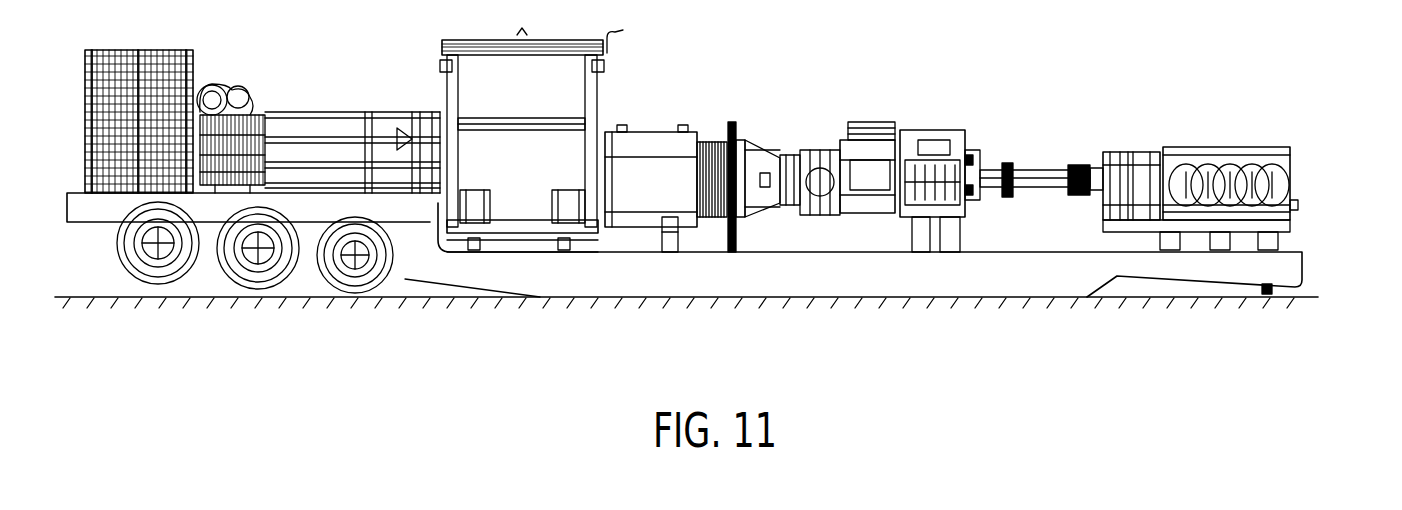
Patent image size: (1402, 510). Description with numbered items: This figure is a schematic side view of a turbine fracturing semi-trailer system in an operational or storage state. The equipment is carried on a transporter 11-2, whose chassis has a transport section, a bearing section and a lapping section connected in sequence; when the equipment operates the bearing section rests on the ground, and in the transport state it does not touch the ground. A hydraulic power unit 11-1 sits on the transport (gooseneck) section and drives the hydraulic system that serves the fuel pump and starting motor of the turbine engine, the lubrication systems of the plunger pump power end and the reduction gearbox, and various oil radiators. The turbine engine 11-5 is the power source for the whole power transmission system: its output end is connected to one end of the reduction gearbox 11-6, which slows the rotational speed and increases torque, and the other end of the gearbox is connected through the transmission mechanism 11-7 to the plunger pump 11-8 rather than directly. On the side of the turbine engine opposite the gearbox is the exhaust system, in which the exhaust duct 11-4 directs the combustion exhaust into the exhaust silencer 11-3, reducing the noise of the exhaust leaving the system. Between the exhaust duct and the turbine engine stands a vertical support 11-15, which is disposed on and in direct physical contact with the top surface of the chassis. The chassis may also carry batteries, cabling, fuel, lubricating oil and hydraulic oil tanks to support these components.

The hydraulic power unit 11-1 is at (247, 182).
The transporter 11-2 is at (417, 233).
The exhaust silencer 11-3 is at (518, 165).
The exhaust duct 11-4 is at (649, 173).
The turbine engine 11-5 is at (863, 188).
The reduction gearbox 11-6 is at (922, 223).
The transmission mechanism 11-7 is at (1042, 178).
The plunger pump 11-8 is at (1213, 203).
The vertical support 11-15 is at (737, 122).